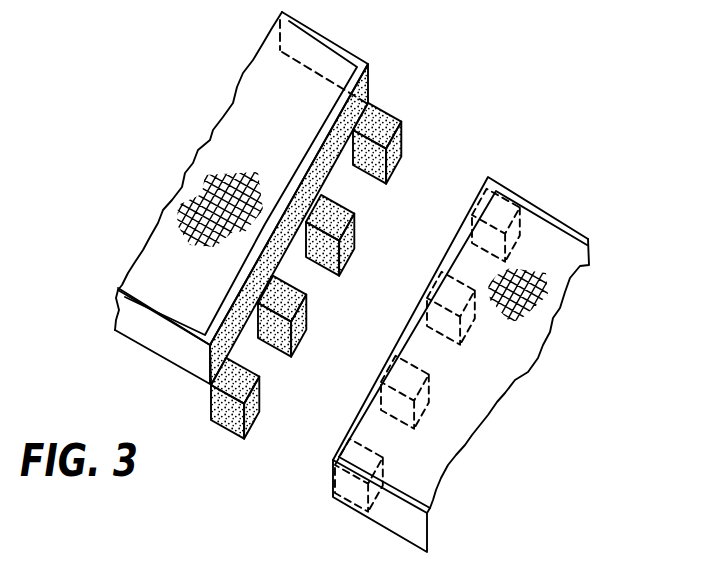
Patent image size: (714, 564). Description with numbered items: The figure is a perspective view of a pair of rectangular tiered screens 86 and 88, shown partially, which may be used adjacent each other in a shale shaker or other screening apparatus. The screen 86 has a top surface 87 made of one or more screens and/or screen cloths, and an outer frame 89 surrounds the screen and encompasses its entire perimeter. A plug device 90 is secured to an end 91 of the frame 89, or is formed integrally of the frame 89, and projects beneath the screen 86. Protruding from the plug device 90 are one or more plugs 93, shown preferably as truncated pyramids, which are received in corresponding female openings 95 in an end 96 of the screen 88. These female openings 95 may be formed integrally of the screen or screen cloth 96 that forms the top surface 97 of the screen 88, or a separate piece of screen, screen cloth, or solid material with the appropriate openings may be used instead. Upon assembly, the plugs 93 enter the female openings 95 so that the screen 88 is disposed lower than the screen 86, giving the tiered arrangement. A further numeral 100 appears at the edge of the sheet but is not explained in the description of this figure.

The rectangular tiered screen 86 is at (180, 328).
The top surface 87 is at (319, 69).
The rectangular tiered screen 88 is at (600, 210).
The outer frame 89 is at (143, 342).
The plug device 90 is at (341, 187).
The end of the frame 91 is at (350, 125).
The plug 93 is at (225, 423).
The female openings 95 is at (511, 224).
The end of the screen 96 is at (521, 291).
The top surface 97 is at (416, 478).
The reference numeral (adjacent figure) 100 is at (62, 553).